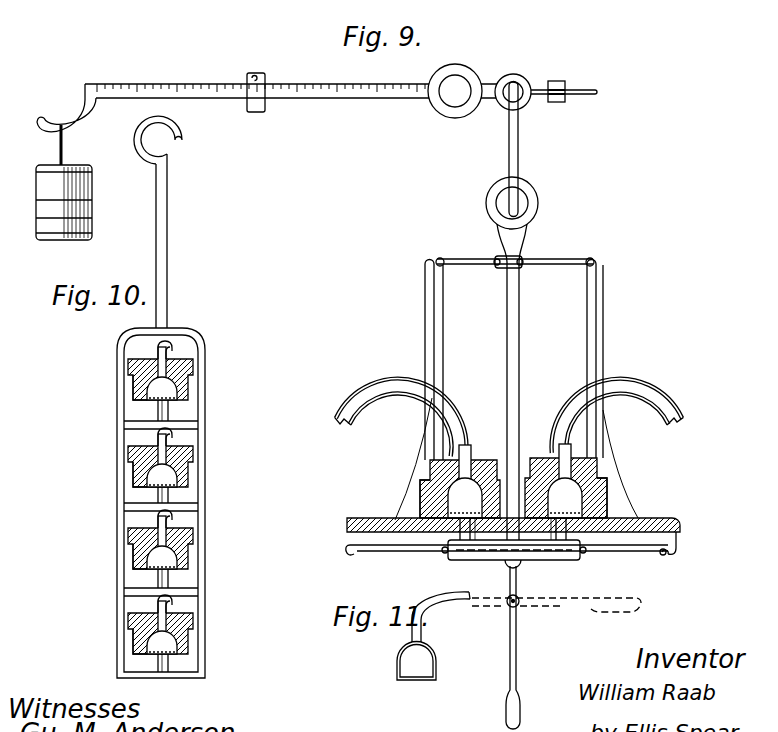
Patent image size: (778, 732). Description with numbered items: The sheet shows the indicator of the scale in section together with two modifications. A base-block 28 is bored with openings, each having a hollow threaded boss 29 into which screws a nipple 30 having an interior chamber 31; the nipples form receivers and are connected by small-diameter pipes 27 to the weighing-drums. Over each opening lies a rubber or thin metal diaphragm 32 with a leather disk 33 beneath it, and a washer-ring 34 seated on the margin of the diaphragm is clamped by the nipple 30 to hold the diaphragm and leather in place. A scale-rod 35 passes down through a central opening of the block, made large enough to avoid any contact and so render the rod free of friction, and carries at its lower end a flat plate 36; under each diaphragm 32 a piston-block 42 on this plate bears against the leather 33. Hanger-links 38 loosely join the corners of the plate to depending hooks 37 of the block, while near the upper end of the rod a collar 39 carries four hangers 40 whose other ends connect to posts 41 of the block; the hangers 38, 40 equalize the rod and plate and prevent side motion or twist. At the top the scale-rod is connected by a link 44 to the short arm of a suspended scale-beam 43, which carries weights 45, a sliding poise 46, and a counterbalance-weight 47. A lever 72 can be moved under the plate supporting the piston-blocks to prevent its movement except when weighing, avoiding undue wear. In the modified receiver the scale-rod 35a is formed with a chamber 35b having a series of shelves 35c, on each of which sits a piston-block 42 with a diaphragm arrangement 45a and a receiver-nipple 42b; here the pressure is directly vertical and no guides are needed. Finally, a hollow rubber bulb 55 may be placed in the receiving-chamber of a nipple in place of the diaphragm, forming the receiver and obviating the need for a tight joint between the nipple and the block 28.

In FIG. 9, the suspended scale-beam 43 is at (233, 97).
In FIG. 9, the weights 45 is at (74, 182).
In FIG. 9, the sliding poise 46 is at (254, 113).
In FIG. 9, the counterbalance-weight 47 is at (564, 81).
In FIG. 9, the link 44 is at (519, 140).
In FIG. 9, the scale-rod 35 is at (519, 372).
In FIG. 9, the hangers 40 is at (483, 250).
In FIG. 9, the collar 39 is at (503, 268).
In FIG. 9, the posts 41 is at (425, 316).
In FIG. 9, the pipes 27 is at (381, 379).
In FIG. 9, the hollow threaded boss 29 is at (420, 490).
In FIG. 9, the washer-ring 34 is at (420, 512).
In FIG. 9, the nipple 30 is at (471, 460).
In FIG. 9, the interior chamber 31 is at (515, 498).
In FIG. 10, the interior chamber 31 is at (162, 497).
In FIG. 9, the base-block 28 is at (672, 517).
In FIG. 9, the depending hooks 37 is at (678, 545).
In FIG. 9, the hanger-links 38 is at (507, 559).
In FIG. 9, the flat plate 36 is at (514, 554).
In FIG. 9, the piston-block 42 is at (465, 522).
In FIG. 10, the piston-block 42 is at (173, 413).
In FIG. 9, the leather disk 33 is at (475, 540).
In FIG. 9, the diaphragm 32 is at (447, 553).
In FIG. 9, the lever 72 is at (517, 636).
In FIG. 11, the hollow rubber bulb 55 is at (433, 636).
In FIG. 10, the scale-rod 35a is at (167, 222).
In FIG. 10, the chamber 35b is at (178, 497).
In FIG. 10, the shelves 35c is at (198, 426).
In FIG. 10, the receiver-nipple 42b is at (192, 367).
In FIG. 10, the diaphragm arrangement 45a is at (150, 405).